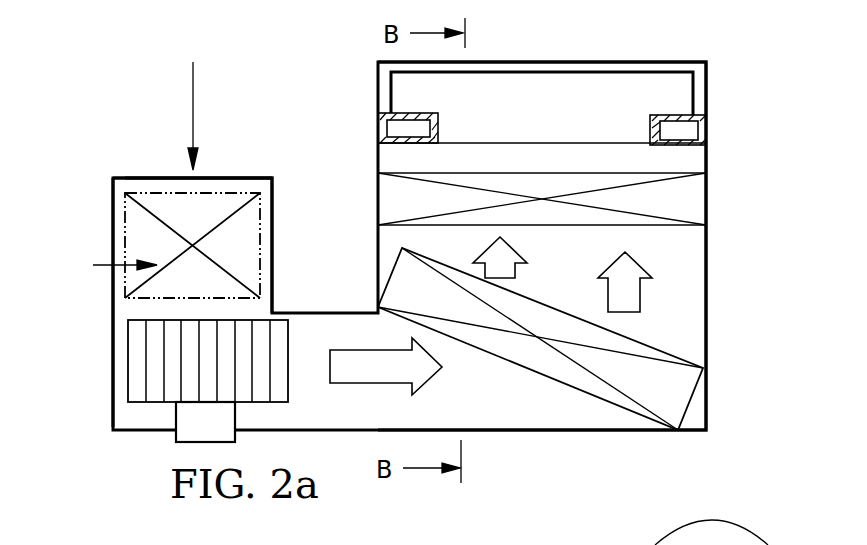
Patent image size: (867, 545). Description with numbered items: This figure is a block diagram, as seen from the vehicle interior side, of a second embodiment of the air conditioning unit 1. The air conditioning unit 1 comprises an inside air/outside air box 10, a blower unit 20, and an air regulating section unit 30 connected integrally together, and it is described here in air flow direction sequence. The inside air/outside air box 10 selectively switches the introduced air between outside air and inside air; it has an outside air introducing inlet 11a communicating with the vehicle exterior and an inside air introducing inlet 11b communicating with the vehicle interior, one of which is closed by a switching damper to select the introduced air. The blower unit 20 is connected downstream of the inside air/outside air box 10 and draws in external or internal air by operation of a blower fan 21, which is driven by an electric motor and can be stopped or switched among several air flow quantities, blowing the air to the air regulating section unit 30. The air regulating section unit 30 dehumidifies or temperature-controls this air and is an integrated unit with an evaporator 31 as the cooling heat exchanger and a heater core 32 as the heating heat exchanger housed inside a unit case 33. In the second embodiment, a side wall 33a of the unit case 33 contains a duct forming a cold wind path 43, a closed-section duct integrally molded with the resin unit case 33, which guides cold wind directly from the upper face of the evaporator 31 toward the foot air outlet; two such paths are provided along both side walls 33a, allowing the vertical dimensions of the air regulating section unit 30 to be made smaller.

The air conditioning unit 1 is at (548, 56).
The inside air/outside air box 10 is at (127, 164).
The outside air introducing inlet 11a is at (232, 178).
The inside air introducing inlet 11b is at (142, 242).
The blower unit 20 is at (129, 445).
The blower fan 21 is at (128, 367).
The air regulating section unit 30 is at (634, 53).
The evaporator 31 is at (585, 390).
The heater core 32 is at (706, 210).
The unit case 33 is at (706, 347).
The side wall 33a is at (385, 163).
The cold wind path 43 is at (395, 113).